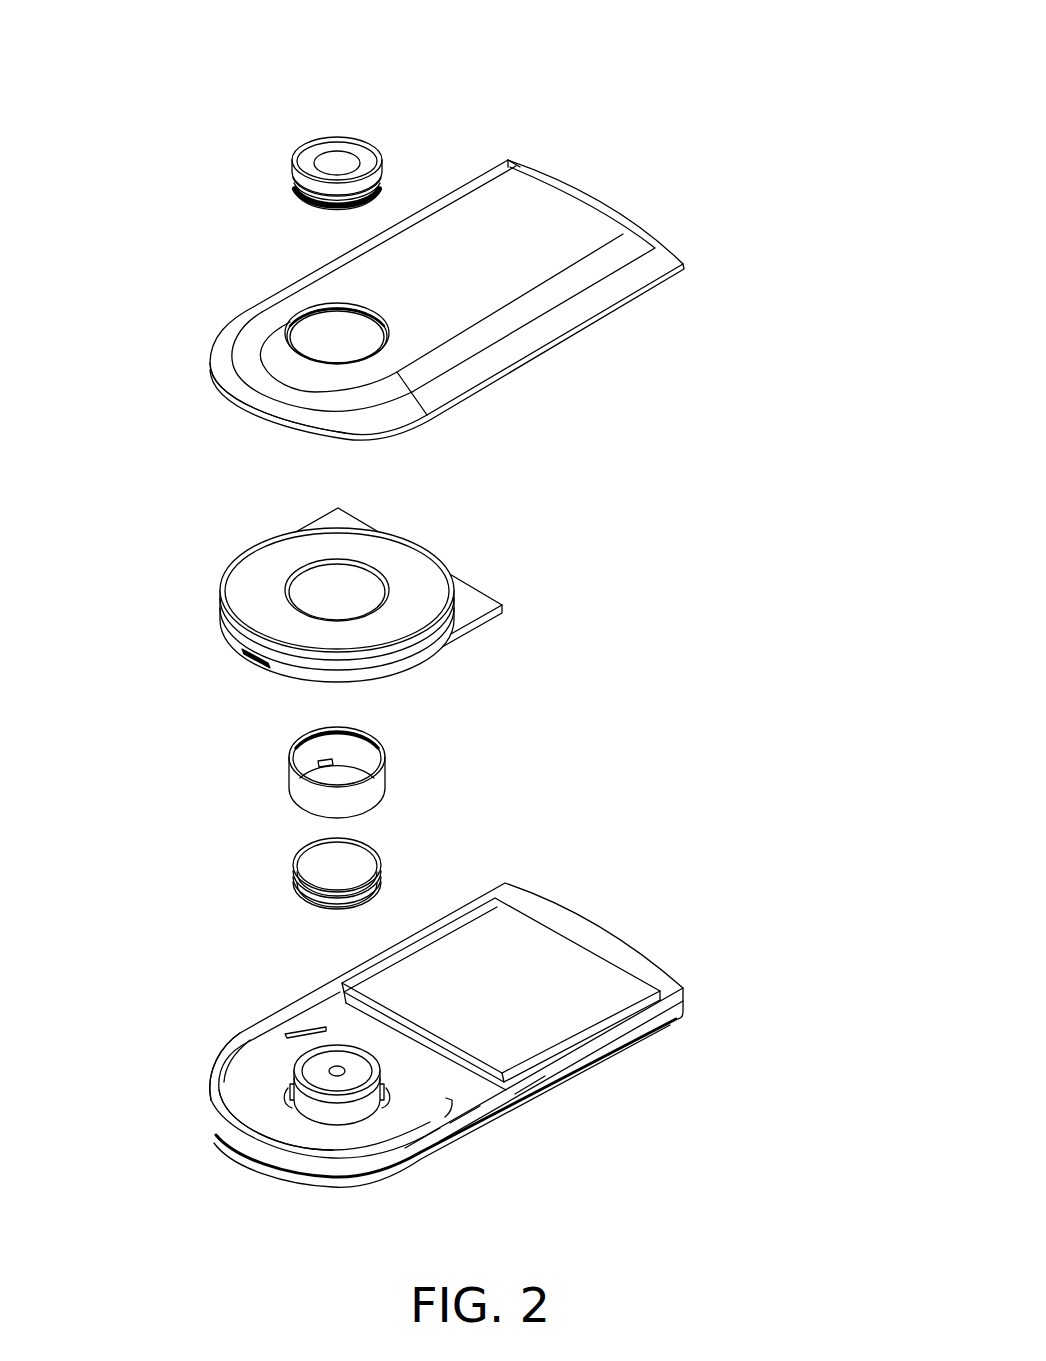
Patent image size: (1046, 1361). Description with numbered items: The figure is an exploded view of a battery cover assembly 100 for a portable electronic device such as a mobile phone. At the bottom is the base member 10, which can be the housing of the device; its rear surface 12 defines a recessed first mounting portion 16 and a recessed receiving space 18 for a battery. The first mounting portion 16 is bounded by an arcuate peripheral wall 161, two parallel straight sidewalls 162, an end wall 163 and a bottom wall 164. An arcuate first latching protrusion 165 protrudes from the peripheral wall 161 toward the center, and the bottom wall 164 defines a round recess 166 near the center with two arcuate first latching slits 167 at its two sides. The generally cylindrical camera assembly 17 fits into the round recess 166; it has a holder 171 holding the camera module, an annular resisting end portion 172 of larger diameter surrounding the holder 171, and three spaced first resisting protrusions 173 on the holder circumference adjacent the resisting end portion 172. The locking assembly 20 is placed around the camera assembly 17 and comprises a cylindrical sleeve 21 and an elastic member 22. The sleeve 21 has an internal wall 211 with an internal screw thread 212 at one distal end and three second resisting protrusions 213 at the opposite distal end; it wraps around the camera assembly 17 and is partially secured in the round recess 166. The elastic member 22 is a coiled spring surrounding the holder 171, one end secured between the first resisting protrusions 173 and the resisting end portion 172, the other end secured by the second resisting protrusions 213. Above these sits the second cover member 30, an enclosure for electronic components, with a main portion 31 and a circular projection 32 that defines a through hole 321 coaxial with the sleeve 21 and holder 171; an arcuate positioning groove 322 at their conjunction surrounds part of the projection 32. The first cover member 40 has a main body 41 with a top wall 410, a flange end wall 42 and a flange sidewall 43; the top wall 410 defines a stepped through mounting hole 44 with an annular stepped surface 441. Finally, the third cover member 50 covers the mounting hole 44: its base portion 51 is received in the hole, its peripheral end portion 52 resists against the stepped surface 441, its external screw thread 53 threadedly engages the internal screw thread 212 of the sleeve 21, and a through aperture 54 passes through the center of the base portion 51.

The battery cover assembly 100 is at (456, 27).
The base member 10 is at (702, 1040).
The rear surface 12 is at (625, 957).
The first mounting portion 16 is at (595, 1165).
The arcuate peripheral wall 161 is at (420, 1140).
The straight sidewalls 162 is at (463, 1125).
The end wall 163 is at (527, 1093).
The bottom wall 164 is at (473, 1090).
The first latching protrusion 165 is at (215, 1100).
The round recess 166 is at (290, 1085).
The first latching slits 167 is at (300, 1028).
The camera assembly 17 is at (333, 1083).
The holder 171 is at (320, 1110).
The resisting end portion 172 is at (367, 1092).
The first resisting protrusions 173 is at (238, 1152).
The receiving space 18 is at (570, 1013).
The locking assembly 20 is at (493, 782).
The sleeve 21 is at (400, 785).
The internal wall 211 is at (300, 760).
The internal screw thread 212 is at (363, 737).
The second resisting protrusions 213 is at (322, 760).
The elastic member 22 is at (375, 858).
The second cover member 30 is at (215, 643).
The main portion 31 is at (468, 601).
The circular projection 32 is at (403, 559).
The through hole 321 is at (312, 590).
The positioning groove 322 is at (400, 655).
The first cover member 40 is at (655, 224).
The main body 41 is at (587, 198).
The top wall 410 is at (513, 198).
The flange end wall 42 is at (252, 400).
The flange sidewall 43 is at (600, 293).
The mounting hole 44 is at (302, 345).
The stepped surface 441 is at (295, 338).
The third cover member 50 is at (357, 124).
The base portion 51 is at (325, 210).
The peripheral end portion 52 is at (292, 168).
The external screw thread 53 is at (297, 197).
The through aperture 54 is at (333, 163).